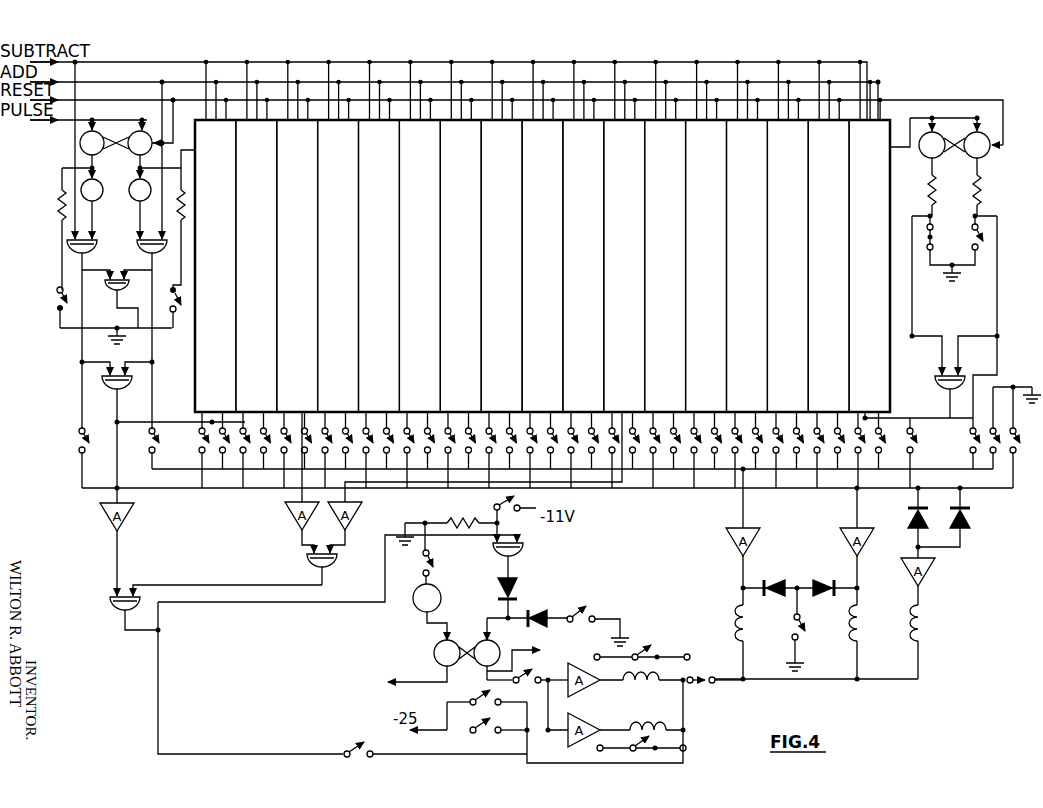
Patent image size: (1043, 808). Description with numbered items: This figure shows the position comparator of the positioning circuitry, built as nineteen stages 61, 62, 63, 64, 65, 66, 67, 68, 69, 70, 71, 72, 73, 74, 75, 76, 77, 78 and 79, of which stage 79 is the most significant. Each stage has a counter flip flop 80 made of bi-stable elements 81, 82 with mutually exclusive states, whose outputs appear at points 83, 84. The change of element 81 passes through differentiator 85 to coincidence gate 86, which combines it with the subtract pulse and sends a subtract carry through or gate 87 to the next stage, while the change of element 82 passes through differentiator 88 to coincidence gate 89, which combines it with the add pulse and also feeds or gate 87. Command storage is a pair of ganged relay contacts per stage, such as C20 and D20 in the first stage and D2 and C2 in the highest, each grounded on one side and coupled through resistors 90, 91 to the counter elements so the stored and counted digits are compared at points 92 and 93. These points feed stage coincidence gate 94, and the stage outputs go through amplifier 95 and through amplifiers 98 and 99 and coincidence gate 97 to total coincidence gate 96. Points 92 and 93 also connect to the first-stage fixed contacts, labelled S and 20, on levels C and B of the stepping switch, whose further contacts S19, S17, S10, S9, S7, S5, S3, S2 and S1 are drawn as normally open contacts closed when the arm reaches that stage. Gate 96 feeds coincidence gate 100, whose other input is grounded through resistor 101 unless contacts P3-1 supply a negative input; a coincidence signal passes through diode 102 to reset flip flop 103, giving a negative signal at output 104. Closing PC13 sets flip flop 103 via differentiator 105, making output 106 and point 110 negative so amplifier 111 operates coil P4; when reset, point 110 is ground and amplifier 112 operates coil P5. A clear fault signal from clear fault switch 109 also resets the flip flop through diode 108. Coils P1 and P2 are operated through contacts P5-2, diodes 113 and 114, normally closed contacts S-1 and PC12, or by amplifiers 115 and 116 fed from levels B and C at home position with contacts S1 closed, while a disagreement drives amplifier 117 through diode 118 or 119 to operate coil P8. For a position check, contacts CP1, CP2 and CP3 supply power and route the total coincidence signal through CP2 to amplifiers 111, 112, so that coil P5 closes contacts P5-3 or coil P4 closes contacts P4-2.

The comparator stage 61 is at (114, 245).
The comparator stage 62 is at (225, 375).
The comparator stage 63 is at (266, 375).
The comparator stage 64 is at (307, 375).
The comparator stage 65 is at (348, 375).
The comparator stage 66 is at (389, 375).
The comparator stage 67 is at (430, 375).
The comparator stage 68 is at (471, 375).
The comparator stage 69 is at (512, 375).
The comparator stage 70 is at (553, 375).
The comparator stage 71 is at (594, 375).
The comparator stage 72 is at (634, 375).
The comparator stage 73 is at (675, 375).
The comparator stage 74 is at (716, 375).
The comparator stage 75 is at (757, 375).
The comparator stage 76 is at (798, 375).
The comparator stage 77 is at (839, 375).
The comparator stage 78 is at (880, 375).
The most significant comparator stage 79 is at (945, 198).
The flip flop 80 is at (73, 131).
The bi-stable element 81 is at (84, 149).
The bi-stable element 82 is at (140, 130).
The output point 83 is at (96, 178).
The output point 84 is at (137, 180).
The differentiator 85 is at (101, 198).
The coincidence gate 86 is at (90, 247).
The or gate 87 is at (112, 291).
The differentiator 88 is at (132, 200).
The coincidence gate 89 is at (145, 249).
The resistor 90 is at (58, 208).
The resistor 91 is at (185, 205).
The comparison point 92 is at (57, 288).
The comparison point 93 is at (178, 292).
The stage coincidence gate 94 is at (106, 388).
The amplifier 95 is at (128, 512).
The total coincidence gate 96 is at (110, 603).
The coincidence gate 97 is at (307, 557).
The amplifier 98 is at (288, 514).
The amplifier 99 is at (359, 508).
The coincidence gate 100 is at (522, 551).
The resistor 101 is at (456, 521).
The diode 102 is at (515, 589).
The flip flop 103 is at (466, 637).
The output 104 is at (428, 680).
The differentiator 105 is at (418, 588).
The output 106 is at (515, 650).
The diode 108 is at (538, 611).
The clear fault switch 109 is at (598, 617).
The point 110 is at (548, 732).
The amplifier 111 is at (590, 728).
The amplifier 112 is at (597, 684).
The diode 113 is at (780, 580).
The diode 114 is at (827, 580).
The amplifier 115 is at (758, 534).
The amplifier 116 is at (845, 534).
The amplifier 117 is at (932, 572).
The diode 118 is at (908, 517).
The diode 119 is at (970, 517).
The stepping switch contacts S20 20 is at (149, 436).
The stepping switch contacts S20 S is at (88, 440).
The switch level B is at (191, 468).
The switch level C is at (182, 487).
The command storage relay contact C20 is at (52, 297).
The command storage relay contact D20 is at (183, 300).
The command storage relay contact D2 is at (951, 244).
The command storage relay contact C2 is at (985, 233).
The stepping switch contacts S1 is at (995, 437).
The stepping switch contacts S2 is at (918, 432).
The stepping switch contacts S3 is at (869, 450).
The stepping switch contacts S5 is at (788, 450).
The stepping switch contacts S7 is at (706, 450).
The stepping switch contacts S9 is at (645, 450).
The stepping switch contacts S10 is at (588, 459).
The stepping switch contacts S17 is at (300, 450).
The stepping switch contacts S19 is at (217, 450).
The relay coil P1 is at (751, 622).
The relay coil P2 is at (865, 622).
The relay coil P8 is at (926, 622).
The relay coil P4 is at (641, 717).
The relay coil P5 is at (641, 688).
The relay contacts P3-1 is at (527, 505).
The relay contacts P5-2 is at (803, 622).
The relay contacts P5-3 is at (642, 641).
The relay contacts P4-2 is at (652, 752).
The check position contacts CP1 is at (487, 691).
The check position contacts CP2 is at (432, 741).
The check position contacts CP3 is at (527, 669).
The position command contacts PC12 is at (487, 717).
The position command contacts PC13 is at (431, 556).
The normally closed contacts S-1 is at (715, 689).